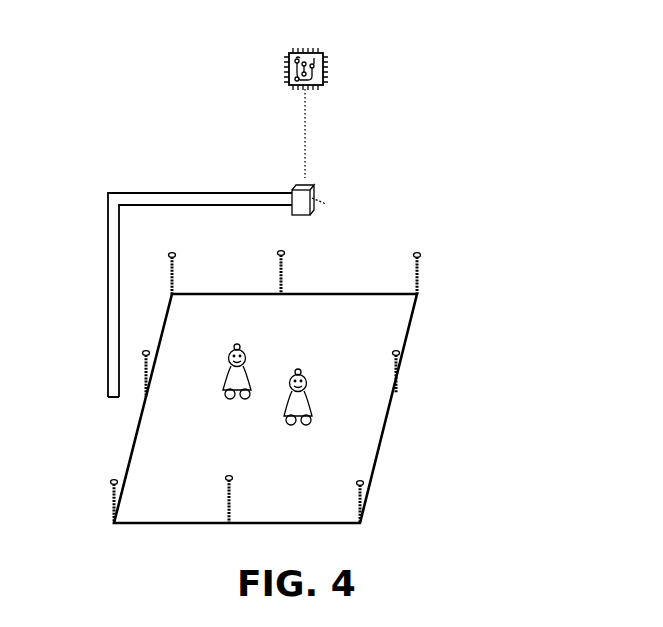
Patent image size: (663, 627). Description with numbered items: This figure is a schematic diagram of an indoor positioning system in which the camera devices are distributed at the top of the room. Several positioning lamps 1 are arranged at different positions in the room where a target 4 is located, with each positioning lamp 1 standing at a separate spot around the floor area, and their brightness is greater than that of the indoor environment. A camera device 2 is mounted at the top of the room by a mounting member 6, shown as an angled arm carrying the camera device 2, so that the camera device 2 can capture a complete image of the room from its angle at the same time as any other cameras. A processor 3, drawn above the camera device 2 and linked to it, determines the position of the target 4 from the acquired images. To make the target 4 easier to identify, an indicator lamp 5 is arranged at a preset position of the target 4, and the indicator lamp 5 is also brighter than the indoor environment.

The positioning lamp 1 is at (410, 456).
The camera device 2 is at (315, 189).
The processor 3 is at (325, 58).
The target 4 is at (296, 362).
The indicator lamp 5 is at (352, 385).
The mounting member 6 is at (108, 237).